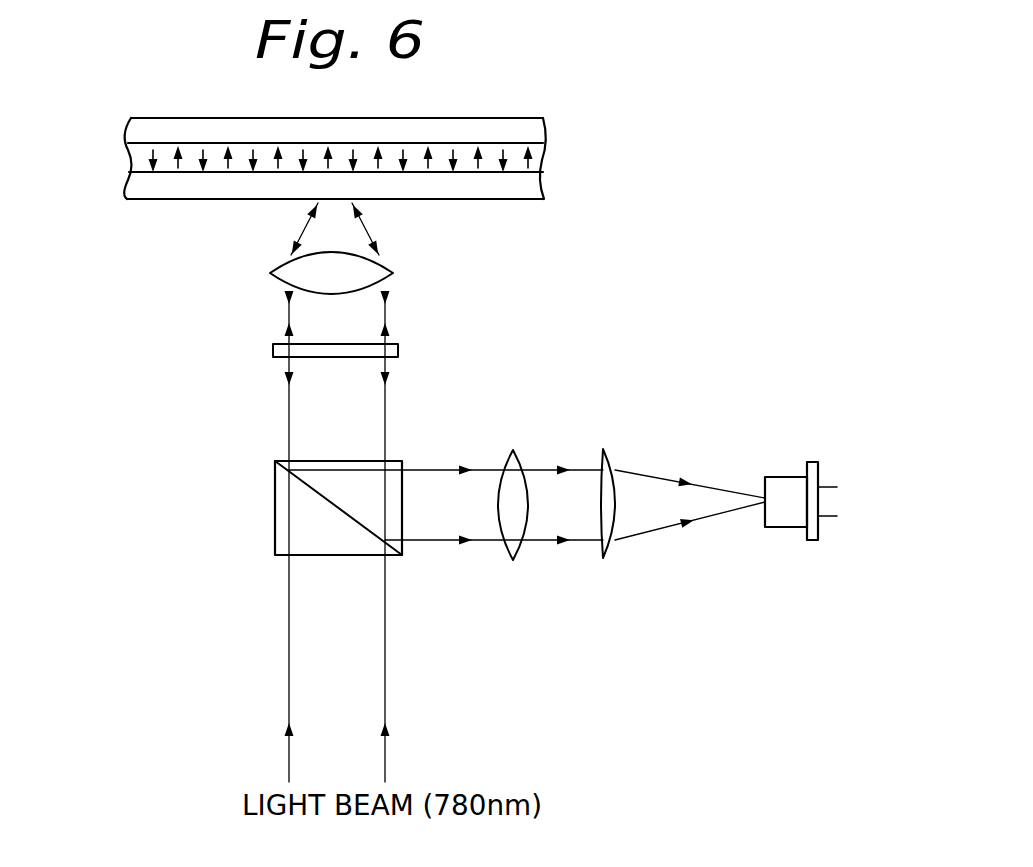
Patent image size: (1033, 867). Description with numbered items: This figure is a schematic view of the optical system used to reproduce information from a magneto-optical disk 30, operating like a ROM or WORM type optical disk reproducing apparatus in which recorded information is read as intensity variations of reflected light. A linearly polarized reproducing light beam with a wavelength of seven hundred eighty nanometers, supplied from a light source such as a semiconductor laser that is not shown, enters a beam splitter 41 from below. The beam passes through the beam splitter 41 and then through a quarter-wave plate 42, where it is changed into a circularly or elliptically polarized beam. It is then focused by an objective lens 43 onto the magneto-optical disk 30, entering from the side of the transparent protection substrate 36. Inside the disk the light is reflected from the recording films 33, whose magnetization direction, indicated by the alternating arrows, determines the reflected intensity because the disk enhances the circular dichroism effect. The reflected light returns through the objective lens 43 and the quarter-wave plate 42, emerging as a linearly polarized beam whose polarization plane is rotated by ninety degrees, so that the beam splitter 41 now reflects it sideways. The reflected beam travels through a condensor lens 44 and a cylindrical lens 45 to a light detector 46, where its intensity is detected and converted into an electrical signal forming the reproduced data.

The magneto-optical disk 30 is at (373, 128).
The recording films 33 is at (541, 152).
The transparent protection substrate 36 is at (528, 186).
The beam splitter 41 is at (275, 510).
The λ/4 plate 42 is at (273, 350).
The objective lens 43 is at (270, 273).
The condensor lens 44 is at (514, 450).
The cylindrical lens 45 is at (608, 450).
The light detector 46 is at (777, 477).